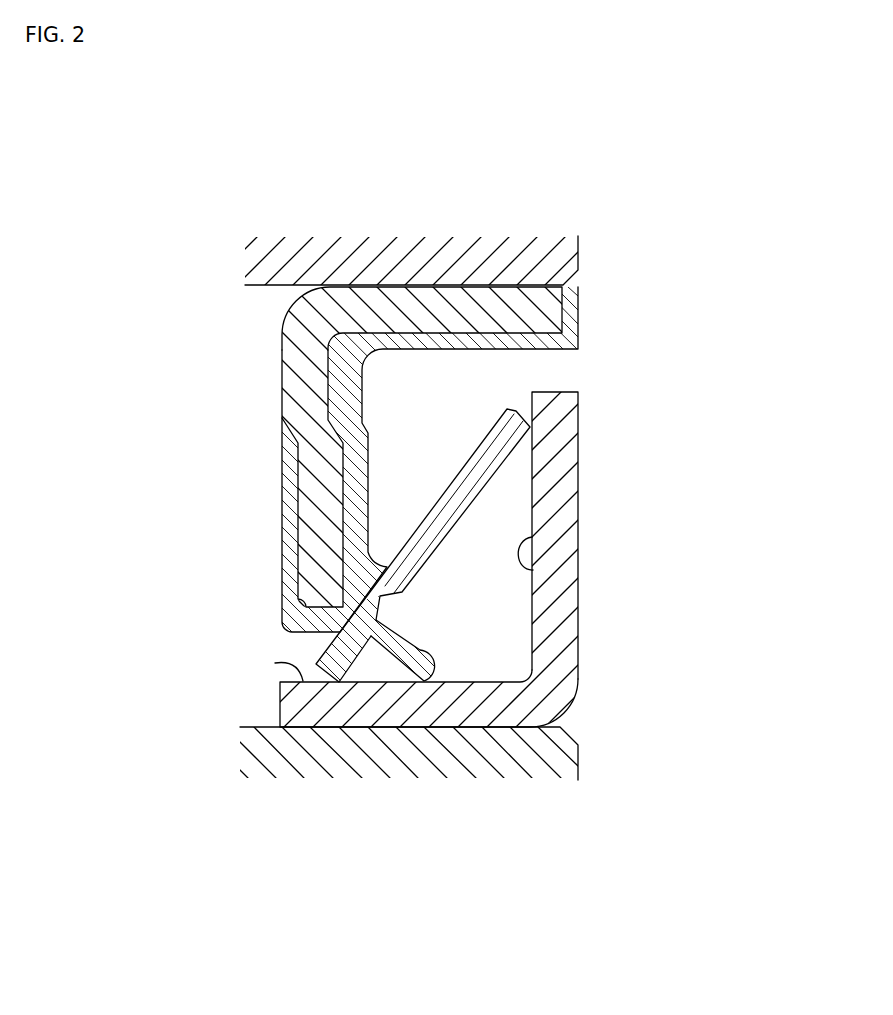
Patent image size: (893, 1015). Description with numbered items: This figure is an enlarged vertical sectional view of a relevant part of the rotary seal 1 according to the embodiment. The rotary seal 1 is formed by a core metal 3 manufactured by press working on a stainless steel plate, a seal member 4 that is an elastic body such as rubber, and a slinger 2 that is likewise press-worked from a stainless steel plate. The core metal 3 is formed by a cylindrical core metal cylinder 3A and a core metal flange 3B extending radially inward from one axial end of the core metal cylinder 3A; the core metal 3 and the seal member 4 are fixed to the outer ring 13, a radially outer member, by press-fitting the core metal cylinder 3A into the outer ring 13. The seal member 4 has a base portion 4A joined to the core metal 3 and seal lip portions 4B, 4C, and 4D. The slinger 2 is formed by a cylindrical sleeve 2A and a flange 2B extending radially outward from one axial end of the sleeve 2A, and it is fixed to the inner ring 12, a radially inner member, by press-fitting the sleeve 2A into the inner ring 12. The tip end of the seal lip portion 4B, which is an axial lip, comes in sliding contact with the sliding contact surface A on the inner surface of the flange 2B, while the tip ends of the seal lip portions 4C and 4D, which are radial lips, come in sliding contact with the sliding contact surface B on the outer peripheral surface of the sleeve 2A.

The rotary seal 1 is at (637, 362).
The slinger 2 is at (735, 522).
The sleeve 2A is at (579, 617).
The flange 2B is at (580, 500).
The core metal 3 is at (140, 245).
The core metal cylinder 3A is at (393, 290).
The core metal flange 3B is at (283, 387).
The seal member 4 is at (487, 505).
The base portion 4A is at (282, 492).
The seal lip portion (axial lip) 4B is at (467, 480).
The seal lip portion (radial lip) 4C is at (424, 639).
The seal lip portion (radial lip) 4D is at (323, 657).
The inner ring 12 is at (383, 766).
The outer ring 13 is at (450, 252).
The sliding contact surface A is at (533, 570).
The sliding contact surface B is at (275, 663).